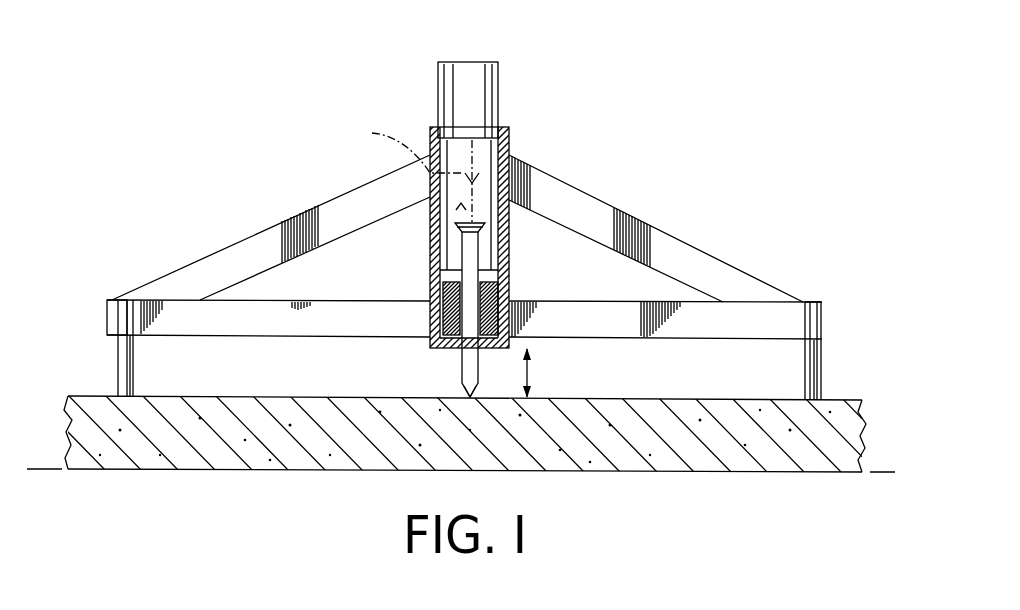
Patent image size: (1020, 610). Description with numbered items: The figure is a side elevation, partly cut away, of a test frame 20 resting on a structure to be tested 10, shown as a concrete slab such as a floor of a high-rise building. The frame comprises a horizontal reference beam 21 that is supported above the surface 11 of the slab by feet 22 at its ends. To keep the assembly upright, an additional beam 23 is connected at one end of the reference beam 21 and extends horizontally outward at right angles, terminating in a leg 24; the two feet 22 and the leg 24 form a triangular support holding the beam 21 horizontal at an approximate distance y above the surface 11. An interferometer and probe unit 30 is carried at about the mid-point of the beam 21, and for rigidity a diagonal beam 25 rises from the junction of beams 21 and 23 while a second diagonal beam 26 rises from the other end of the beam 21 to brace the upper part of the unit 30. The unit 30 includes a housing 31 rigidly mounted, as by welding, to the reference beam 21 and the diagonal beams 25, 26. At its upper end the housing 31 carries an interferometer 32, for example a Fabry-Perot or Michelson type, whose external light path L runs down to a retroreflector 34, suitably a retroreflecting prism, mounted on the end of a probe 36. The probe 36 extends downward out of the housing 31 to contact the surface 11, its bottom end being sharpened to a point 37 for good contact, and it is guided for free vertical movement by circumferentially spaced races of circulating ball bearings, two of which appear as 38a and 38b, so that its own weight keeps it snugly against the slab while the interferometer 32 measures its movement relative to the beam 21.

The structure to be tested 10 is at (172, 469).
The surface of the structure 11 is at (681, 397).
The test frame 20 is at (201, 220).
The reference beam 21 is at (747, 313).
The feet 22 is at (822, 360).
The additional beam 23 is at (107, 318).
The leg 24 is at (118, 370).
The diagonal beam 25 is at (327, 207).
The diagonal beam 26 is at (718, 258).
The interferometer and probe unit 30 is at (522, 230).
The housing 31 is at (510, 134).
The interferometer 32 is at (492, 76).
The retroreflector 34 is at (483, 224).
The probe 36 is at (465, 355).
The point 37 is at (463, 393).
The race of circulating ball bearings 38a is at (437, 294).
The race of circulating ball bearings 38b is at (512, 292).
The external light path L is at (413, 170).
The distance above the surface y is at (544, 373).